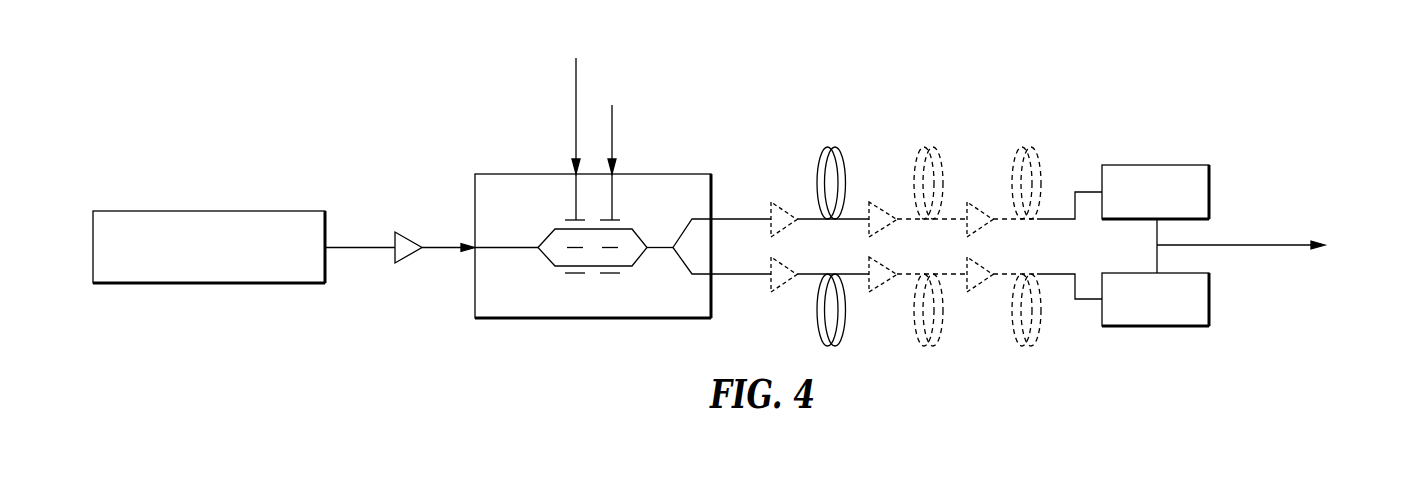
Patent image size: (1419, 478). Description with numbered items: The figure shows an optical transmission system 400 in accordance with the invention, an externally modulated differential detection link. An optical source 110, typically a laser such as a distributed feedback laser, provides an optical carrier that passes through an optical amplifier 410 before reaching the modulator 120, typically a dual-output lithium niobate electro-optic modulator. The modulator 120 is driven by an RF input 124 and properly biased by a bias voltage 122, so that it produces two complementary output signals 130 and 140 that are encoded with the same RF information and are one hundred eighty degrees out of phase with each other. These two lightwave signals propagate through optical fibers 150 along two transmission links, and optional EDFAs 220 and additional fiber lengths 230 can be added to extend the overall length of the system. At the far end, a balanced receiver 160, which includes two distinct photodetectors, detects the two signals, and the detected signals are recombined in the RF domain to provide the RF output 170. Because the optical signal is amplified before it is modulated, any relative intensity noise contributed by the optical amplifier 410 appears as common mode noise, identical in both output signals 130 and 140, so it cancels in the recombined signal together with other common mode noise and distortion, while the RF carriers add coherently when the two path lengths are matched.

The optical source 110 is at (153, 211).
The optical transmission system 400 is at (372, 124).
The optical amplifier 410 is at (403, 230).
The modulator 120 is at (475, 195).
The RF input 124 is at (574, 130).
The bias voltage 122 is at (614, 130).
The output signal 130 is at (744, 172).
The output signal 140 is at (724, 320).
The optical fibers 150 is at (829, 147).
The EDFAs 220 is at (878, 203).
The fiber lengths 230 is at (929, 345).
The balanced receiver 160 is at (1164, 136).
The RF output 170 is at (1275, 248).